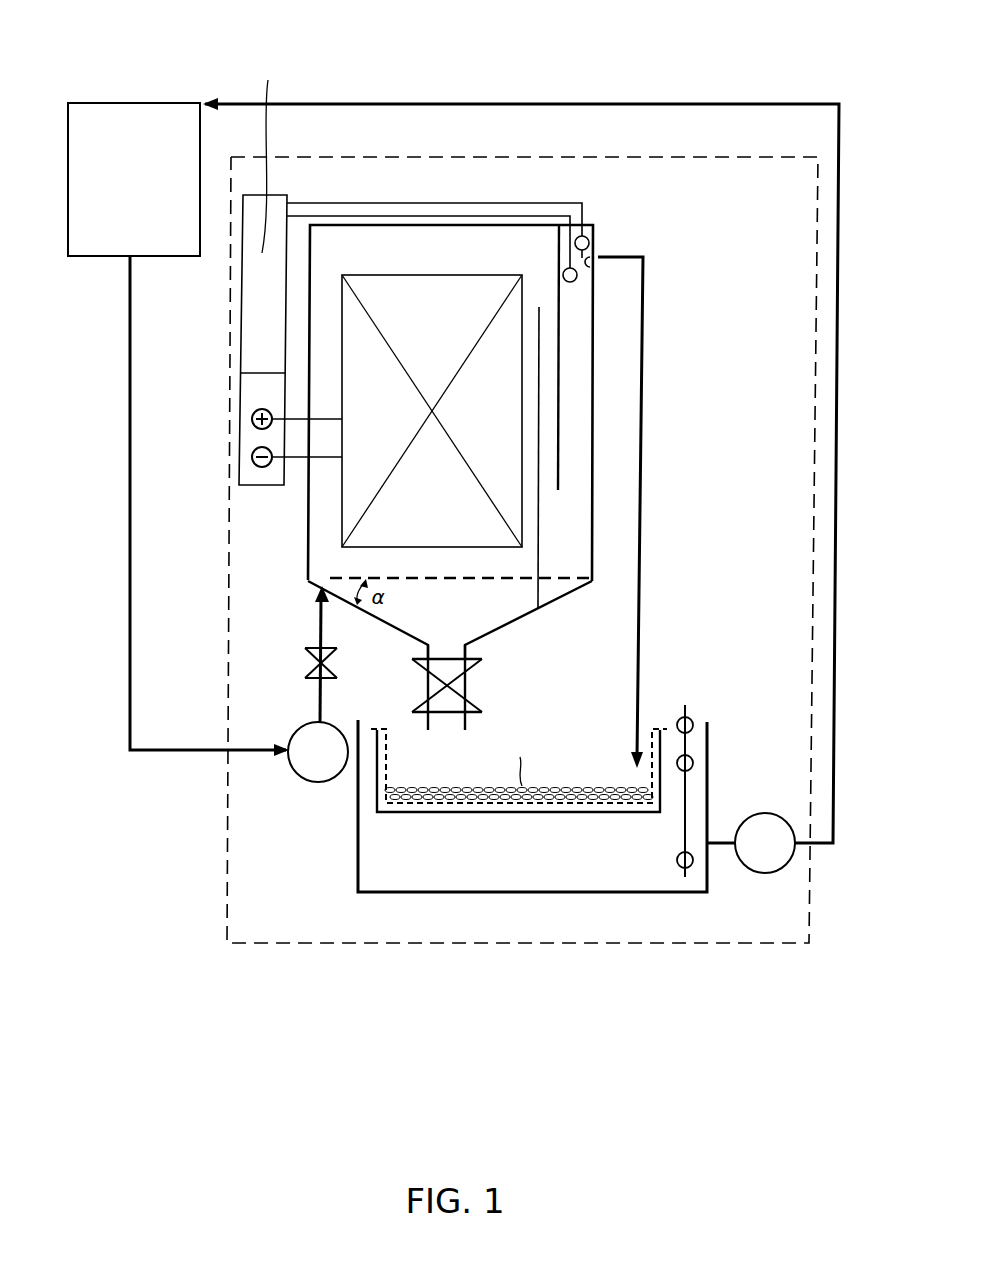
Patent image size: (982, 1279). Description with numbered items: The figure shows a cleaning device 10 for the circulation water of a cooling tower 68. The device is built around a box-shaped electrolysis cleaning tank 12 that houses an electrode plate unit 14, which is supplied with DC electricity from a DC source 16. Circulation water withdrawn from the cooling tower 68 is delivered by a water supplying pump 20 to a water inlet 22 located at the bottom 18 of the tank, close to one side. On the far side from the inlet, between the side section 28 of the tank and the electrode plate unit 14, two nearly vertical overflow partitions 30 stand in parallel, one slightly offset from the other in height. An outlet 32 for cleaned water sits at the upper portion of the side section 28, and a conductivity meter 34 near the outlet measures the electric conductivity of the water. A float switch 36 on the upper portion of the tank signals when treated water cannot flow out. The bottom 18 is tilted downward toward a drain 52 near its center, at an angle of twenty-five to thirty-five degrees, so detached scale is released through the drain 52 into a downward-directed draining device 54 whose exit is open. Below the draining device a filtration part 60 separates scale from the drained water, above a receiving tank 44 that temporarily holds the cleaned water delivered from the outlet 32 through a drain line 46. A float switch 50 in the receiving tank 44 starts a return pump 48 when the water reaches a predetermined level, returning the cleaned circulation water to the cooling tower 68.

The cleaning device 10 is at (615, 157).
The electrolysis cleaning tank 12 is at (307, 528).
The electrode plate unit 14 is at (418, 275).
The DC source 16 is at (239, 431).
The bottom 18 is at (511, 631).
The water supplying pump 20 is at (310, 782).
The water inlet 22 is at (318, 588).
The side section 28 is at (593, 463).
The overflow partitions 30 is at (543, 404).
The outlet 32 is at (598, 262).
The conductivity meter 34 is at (574, 282).
The float switch 36 is at (590, 240).
The receiving tank 44 is at (508, 892).
The drain line 46 is at (642, 572).
The return pump 48 is at (763, 874).
The float switch 50 is at (687, 798).
The drain 52 is at (450, 648).
The draining device 54 is at (478, 689).
The filtration part 60 is at (483, 803).
The cooling tower 68 is at (151, 103).